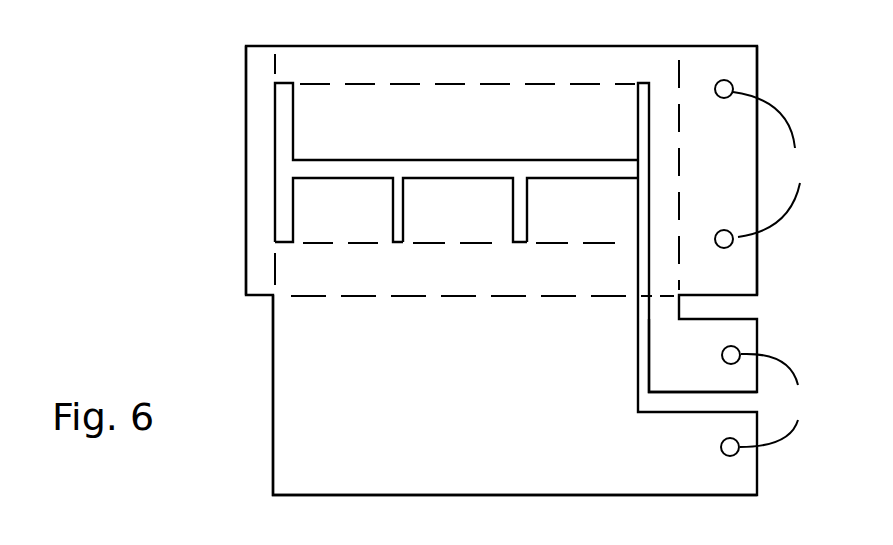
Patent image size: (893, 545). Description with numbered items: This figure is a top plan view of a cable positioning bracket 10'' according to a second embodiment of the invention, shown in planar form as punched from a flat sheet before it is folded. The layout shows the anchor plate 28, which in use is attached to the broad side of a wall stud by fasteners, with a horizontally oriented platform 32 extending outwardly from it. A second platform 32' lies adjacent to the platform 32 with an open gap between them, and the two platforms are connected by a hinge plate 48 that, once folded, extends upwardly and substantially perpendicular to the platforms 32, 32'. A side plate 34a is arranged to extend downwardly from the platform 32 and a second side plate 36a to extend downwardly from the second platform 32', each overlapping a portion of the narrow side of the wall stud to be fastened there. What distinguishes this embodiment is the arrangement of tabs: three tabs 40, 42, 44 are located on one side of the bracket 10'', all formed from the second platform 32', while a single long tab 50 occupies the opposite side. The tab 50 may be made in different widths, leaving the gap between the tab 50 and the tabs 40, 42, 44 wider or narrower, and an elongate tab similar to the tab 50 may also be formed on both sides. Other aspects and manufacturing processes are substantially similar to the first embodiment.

The cable positioning bracket 10'' is at (416, 270).
The anchor plate 28 is at (736, 177).
The platform 32 is at (455, 67).
The second platform 32' is at (474, 274).
The side plate 34a is at (712, 363).
The second side plate 36a is at (482, 365).
The tab 40 is at (362, 223).
The tab 42 is at (477, 223).
The tab 44 is at (591, 224).
The hinge plate 48 is at (223, 252).
The tab 50 is at (480, 140).